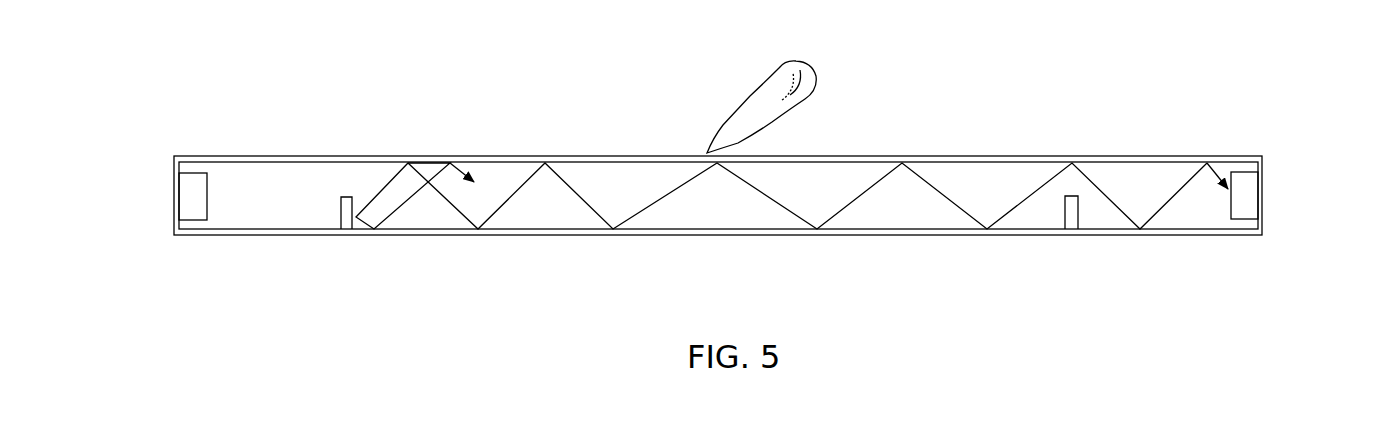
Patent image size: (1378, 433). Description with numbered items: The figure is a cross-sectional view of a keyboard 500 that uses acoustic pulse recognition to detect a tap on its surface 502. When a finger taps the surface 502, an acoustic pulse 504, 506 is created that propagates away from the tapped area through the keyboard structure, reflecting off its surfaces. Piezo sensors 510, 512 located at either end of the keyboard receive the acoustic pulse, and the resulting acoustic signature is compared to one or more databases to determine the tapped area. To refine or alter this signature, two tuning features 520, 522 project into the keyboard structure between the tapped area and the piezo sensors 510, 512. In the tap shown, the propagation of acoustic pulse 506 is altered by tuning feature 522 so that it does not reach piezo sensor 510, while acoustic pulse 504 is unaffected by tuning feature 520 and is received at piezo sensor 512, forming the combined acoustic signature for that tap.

The keyboard 500 is at (513, 118).
The surface 502 is at (1060, 160).
The acoustic pulse 504 is at (963, 213).
The acoustic pulse 506 is at (393, 213).
The piezo sensor 510 is at (192, 195).
The piezo sensor 512 is at (1238, 180).
The tuning feature 520 is at (1072, 233).
The tuning feature 522 is at (350, 230).